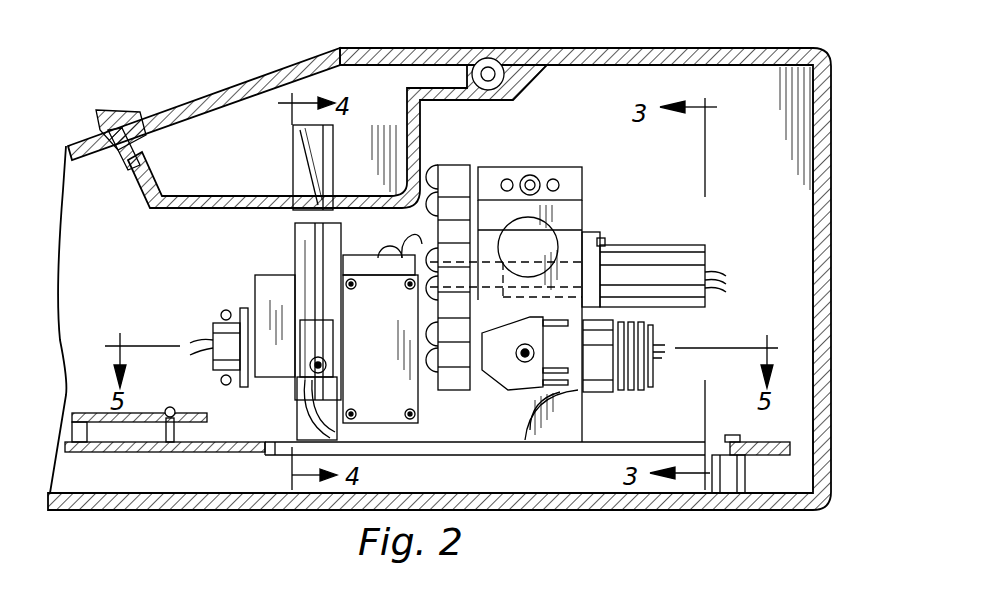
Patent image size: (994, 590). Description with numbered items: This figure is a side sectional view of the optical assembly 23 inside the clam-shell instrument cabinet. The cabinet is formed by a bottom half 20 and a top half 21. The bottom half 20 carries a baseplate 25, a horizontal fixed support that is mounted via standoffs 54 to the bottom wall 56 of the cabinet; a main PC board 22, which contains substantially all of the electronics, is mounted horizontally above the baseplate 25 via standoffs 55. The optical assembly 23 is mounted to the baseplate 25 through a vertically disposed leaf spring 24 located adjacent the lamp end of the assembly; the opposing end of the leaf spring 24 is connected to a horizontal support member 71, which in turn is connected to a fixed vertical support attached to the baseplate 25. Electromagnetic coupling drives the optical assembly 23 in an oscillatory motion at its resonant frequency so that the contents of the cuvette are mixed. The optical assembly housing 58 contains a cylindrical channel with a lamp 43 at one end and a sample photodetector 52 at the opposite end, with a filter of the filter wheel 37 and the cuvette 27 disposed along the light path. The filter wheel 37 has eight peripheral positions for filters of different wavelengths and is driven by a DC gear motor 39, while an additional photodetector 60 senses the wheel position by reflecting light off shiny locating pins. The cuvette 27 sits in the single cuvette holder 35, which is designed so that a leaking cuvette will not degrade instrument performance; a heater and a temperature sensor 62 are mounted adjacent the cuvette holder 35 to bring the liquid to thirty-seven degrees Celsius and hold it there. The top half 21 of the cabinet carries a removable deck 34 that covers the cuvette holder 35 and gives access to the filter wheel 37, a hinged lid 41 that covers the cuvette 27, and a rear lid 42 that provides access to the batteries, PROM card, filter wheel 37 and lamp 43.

The bottom half of the cabinet 20 is at (833, 400).
The top half of the cabinet 21 is at (832, 322).
The main PC board 22 is at (152, 413).
The optical assembly 23 is at (528, 172).
The leaf spring 24 is at (583, 212).
The baseplate 25 is at (642, 442).
The cuvette 27 is at (335, 165).
The removable deck 34 is at (197, 205).
The cuvette holder 35 is at (292, 255).
The filter wheel 37 is at (450, 182).
The DC gear motor 39 is at (663, 243).
The hinged lid 41 is at (323, 52).
The rear lid 42 is at (752, 50).
The lamp 43 is at (603, 375).
The sample photodetector 52 is at (210, 327).
The standoffs 54 is at (750, 473).
The standoffs 55 is at (180, 433).
The bottom wall 56 is at (637, 510).
The optical assembly housing 58 is at (513, 440).
The additional photodetector 60 is at (495, 372).
The temperature sensor 62 is at (332, 335).
The horizontal support member 71 is at (572, 167).